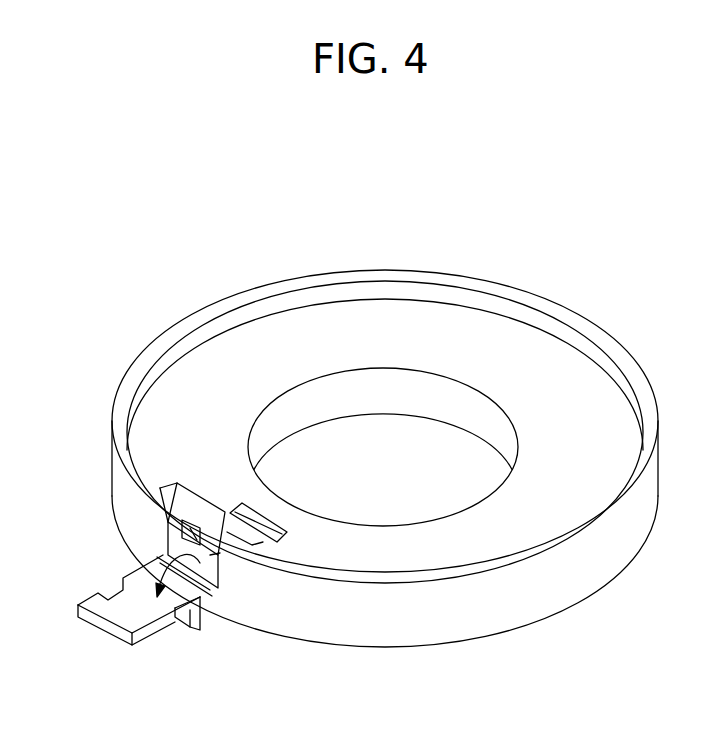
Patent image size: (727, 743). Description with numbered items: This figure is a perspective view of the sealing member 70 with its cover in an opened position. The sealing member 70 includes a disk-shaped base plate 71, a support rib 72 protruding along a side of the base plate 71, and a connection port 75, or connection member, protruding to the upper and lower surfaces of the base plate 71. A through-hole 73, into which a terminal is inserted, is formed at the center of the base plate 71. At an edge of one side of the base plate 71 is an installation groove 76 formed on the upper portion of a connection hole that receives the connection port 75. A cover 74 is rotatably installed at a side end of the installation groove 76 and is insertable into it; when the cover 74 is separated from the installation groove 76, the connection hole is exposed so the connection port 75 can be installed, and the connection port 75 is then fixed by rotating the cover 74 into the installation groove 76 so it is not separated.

The sealing member 70 is at (558, 265).
The base plate 71 is at (380, 327).
The support rib 72 is at (197, 320).
The through-hole 73 is at (310, 407).
The cover 74 is at (127, 615).
The connection port 75 is at (173, 497).
The installation groove 76 is at (258, 545).